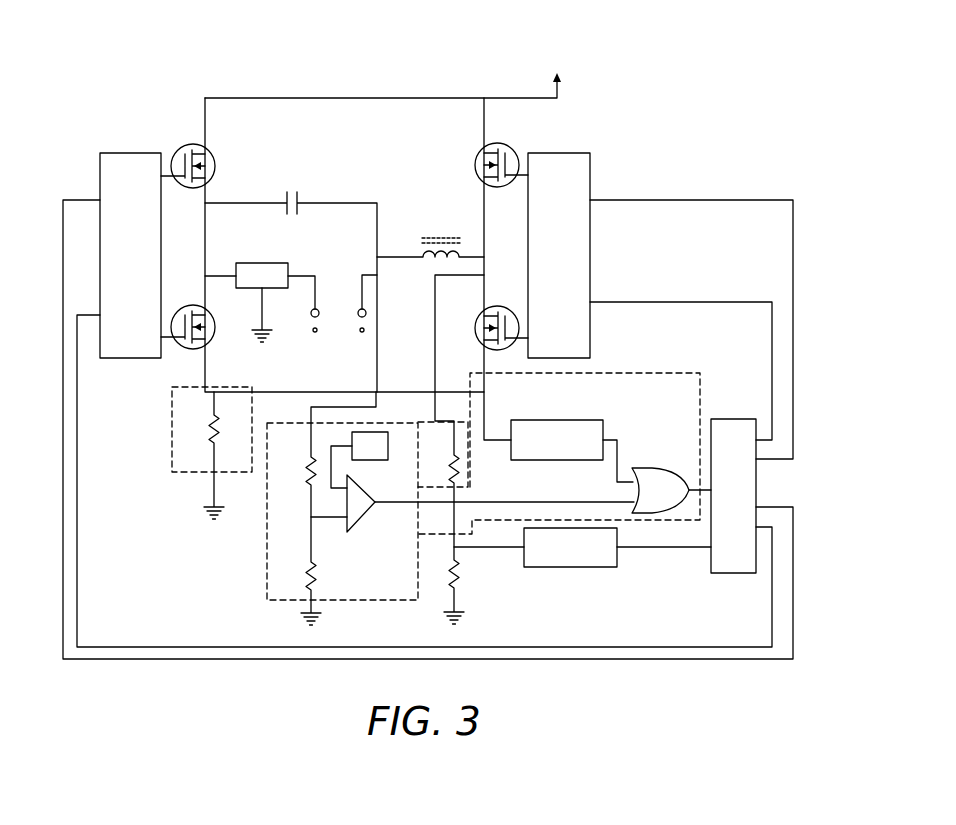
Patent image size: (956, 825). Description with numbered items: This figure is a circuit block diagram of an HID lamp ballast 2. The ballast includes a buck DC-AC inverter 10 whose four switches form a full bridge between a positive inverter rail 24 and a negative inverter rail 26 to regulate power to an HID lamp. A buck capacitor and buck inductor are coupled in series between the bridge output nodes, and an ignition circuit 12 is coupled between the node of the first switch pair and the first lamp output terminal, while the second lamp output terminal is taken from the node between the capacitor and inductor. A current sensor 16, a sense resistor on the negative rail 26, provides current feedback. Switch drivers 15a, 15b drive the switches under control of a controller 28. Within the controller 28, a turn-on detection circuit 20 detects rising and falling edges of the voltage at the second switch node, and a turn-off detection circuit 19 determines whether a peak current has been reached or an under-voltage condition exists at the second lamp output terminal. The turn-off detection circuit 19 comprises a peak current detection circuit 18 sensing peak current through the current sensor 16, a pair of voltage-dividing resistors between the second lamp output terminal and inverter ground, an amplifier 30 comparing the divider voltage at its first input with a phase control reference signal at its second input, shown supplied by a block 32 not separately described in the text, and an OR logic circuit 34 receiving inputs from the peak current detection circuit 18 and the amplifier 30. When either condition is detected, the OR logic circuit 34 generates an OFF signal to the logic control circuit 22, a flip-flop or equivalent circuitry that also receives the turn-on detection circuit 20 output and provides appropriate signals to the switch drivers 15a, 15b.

The HID lamp ballast 2 is at (104, 60).
The inverter 10 is at (213, 46).
The ignition circuit 12 is at (262, 259).
The switch driver 15a is at (130, 153).
The switch driver 15b is at (590, 176).
The current sensor 16 is at (172, 455).
The peak current detection circuit 18 is at (540, 420).
The turn-off detection circuit 19 is at (267, 562).
The turn-on detection circuit 20 is at (580, 567).
The logic control circuit 22 is at (725, 573).
The positive inverter rail 24 is at (405, 97).
The negative inverter rail 26 is at (297, 392).
The controller 28 is at (810, 434).
The amplifier 30 is at (367, 512).
The reference voltage source 32 is at (388, 448).
The OR logic circuit 34 is at (665, 468).